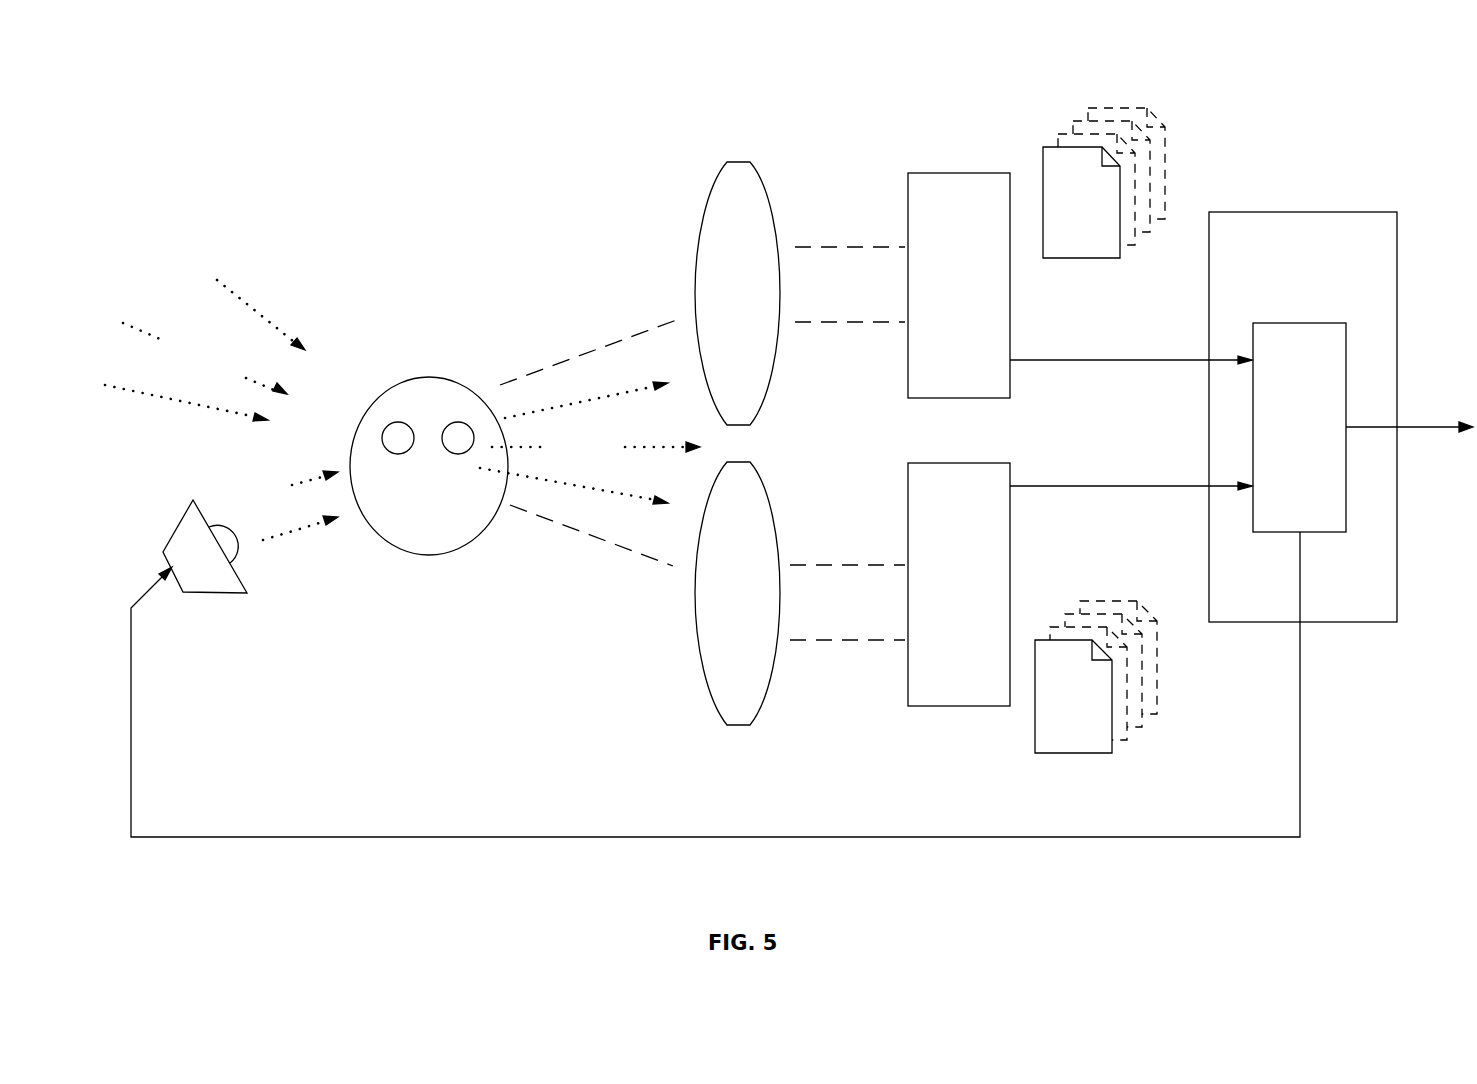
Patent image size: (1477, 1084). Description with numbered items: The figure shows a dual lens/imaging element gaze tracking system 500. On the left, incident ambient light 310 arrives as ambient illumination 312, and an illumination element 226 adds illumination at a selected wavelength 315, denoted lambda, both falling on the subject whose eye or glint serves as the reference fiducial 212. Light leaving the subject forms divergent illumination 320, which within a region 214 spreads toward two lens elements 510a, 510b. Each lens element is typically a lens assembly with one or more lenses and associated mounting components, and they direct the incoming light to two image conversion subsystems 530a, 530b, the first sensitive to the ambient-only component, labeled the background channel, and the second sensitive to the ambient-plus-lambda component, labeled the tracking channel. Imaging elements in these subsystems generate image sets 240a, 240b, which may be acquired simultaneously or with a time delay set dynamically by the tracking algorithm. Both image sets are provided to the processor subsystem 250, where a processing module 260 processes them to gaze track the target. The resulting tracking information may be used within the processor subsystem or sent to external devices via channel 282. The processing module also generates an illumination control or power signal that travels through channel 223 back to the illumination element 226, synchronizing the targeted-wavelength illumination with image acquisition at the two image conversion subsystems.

The dual lens/imaging element gaze tracking system 500 is at (605, 102).
The incident ambient light 310 is at (182, 292).
The ambient illumination 312 is at (225, 371).
The reference fiducial 212 is at (438, 413).
The illumination element 226 is at (168, 530).
The illumination at a selected wavelength 315 is at (267, 508).
The field of view 214 is at (566, 316).
The illumination 320 is at (607, 463).
The lens element 510a is at (728, 158).
The lens element 510b is at (710, 725).
The image conversion subsystem 530a is at (972, 391).
The image conversion subsystem 530b is at (972, 697).
The image set 240a is at (1055, 112).
The image set 240b is at (1147, 755).
The processor subsystem 250 is at (1267, 616).
The processing module 260 is at (1308, 523).
The channel 282 is at (1427, 424).
The channel 223 is at (392, 835).